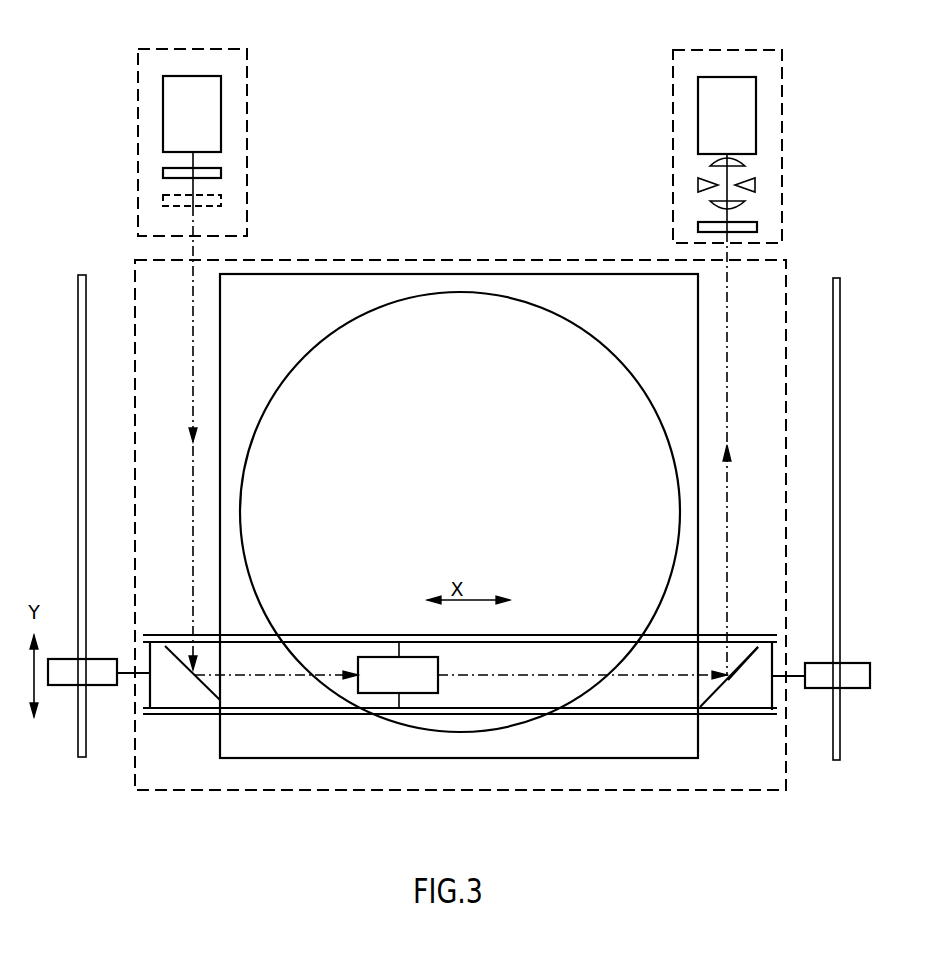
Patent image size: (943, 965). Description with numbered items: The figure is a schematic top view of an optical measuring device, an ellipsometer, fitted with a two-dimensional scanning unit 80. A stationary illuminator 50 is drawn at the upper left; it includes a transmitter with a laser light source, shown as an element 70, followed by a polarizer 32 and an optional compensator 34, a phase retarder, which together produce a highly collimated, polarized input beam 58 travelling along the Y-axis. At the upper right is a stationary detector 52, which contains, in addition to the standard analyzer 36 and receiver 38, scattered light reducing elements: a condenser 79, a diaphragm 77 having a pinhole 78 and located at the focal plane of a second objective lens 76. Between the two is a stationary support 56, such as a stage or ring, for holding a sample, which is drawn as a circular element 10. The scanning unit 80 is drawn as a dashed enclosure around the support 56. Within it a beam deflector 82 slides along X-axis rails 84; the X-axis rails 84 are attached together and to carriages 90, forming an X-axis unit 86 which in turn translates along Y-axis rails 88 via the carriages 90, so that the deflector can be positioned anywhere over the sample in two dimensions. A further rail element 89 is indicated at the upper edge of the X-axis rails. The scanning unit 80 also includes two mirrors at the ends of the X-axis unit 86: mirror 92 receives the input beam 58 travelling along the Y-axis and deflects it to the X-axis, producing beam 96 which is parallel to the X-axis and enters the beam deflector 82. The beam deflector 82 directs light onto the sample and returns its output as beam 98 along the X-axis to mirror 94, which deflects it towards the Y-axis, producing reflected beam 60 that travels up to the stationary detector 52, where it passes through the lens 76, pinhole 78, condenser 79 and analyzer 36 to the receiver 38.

The wafer 10 is at (522, 323).
The polarizer 32 is at (217, 173).
The optional compensator 34 is at (220, 198).
The analyzer 36 is at (757, 227).
The receiver 38 is at (750, 102).
The stationary illuminator 50 is at (217, 51).
The stationary detector 52 is at (740, 55).
The stationary support 56 is at (348, 292).
The input beam 58 is at (193, 250).
The reflected beam 60 is at (727, 251).
The light source 70 is at (213, 125).
The second objective lens 76 is at (745, 207).
The diaphragm 77 is at (756, 188).
The pinhole 78 is at (725, 186).
The condenser 79 is at (740, 167).
The two-dimensional scanning unit 80 is at (427, 265).
The beam deflector 82 is at (385, 680).
The X-axis rails 84 is at (730, 715).
The X-axis unit 86 is at (757, 698).
The Y-axis rails 88 is at (80, 353).
The rail 89 is at (745, 637).
The carriages 90 is at (68, 665).
The mirror 92 is at (182, 663).
The mirror 94 is at (742, 690).
The beam 96 is at (268, 675).
The beam 98 is at (645, 676).